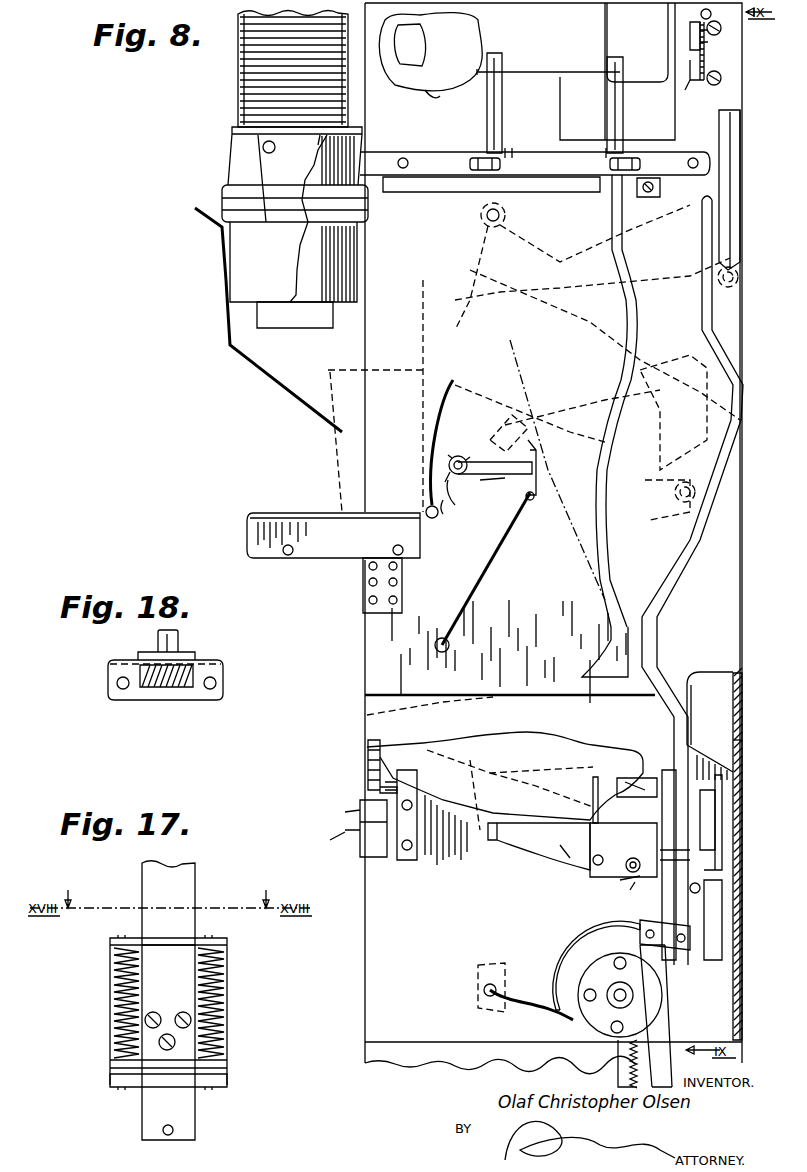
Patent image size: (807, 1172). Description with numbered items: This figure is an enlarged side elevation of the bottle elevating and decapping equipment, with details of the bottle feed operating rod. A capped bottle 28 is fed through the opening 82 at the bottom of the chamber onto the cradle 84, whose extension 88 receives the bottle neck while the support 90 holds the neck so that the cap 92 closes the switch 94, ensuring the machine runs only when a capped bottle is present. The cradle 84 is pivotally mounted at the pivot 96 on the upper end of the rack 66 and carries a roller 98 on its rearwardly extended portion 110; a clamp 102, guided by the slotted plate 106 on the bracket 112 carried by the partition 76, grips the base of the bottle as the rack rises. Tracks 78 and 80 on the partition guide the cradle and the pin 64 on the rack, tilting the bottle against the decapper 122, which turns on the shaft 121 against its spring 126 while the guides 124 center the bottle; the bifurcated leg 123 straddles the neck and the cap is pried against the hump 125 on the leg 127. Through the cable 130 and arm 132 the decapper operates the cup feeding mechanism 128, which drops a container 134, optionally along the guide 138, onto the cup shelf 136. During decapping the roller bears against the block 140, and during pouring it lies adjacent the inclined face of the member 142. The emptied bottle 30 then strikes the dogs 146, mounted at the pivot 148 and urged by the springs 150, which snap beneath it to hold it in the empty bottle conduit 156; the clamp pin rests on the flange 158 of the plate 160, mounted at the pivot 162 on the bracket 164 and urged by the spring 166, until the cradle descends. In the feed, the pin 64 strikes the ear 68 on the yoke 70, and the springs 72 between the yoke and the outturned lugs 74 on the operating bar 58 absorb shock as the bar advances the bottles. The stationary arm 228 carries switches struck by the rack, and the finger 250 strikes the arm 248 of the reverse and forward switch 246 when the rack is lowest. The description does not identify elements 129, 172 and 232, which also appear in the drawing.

In FIG. 8, the capped bottle 28 is at (530, 752).
In FIG. 8, the empty bottle 30 is at (470, 42).
In FIG. 18, the operating bar 58 is at (175, 687).
In FIG. 17, the operating bar 58 is at (178, 880).
In FIG. 8, the pin 64 is at (688, 935).
In FIG. 8, the rack 66 is at (622, 1052).
In FIG. 18, the ear 68 is at (180, 638).
In FIG. 18, the yoke 70 is at (224, 670).
In FIG. 17, the yoke 70 is at (200, 940).
In FIG. 17, the springs 72 is at (226, 990).
In FIG. 17, the outturned lugs 74 is at (118, 1072).
In FIG. 8, the partition 76 is at (448, 905).
In FIG. 8, the track 78 is at (610, 362).
In FIG. 8, the track 80 is at (735, 442).
In FIG. 8, the opening 82 is at (380, 700).
In FIG. 8, the cradle 84 is at (623, 858).
In FIG. 8, the extension 88 is at (555, 850).
In FIG. 8, the support 90 is at (407, 862).
In FIG. 8, the cap 92 is at (368, 758).
In FIG. 8, the switch 94 is at (358, 800).
In FIG. 8, the pivot 96 is at (617, 882).
In FIG. 8, the roller 98 is at (745, 295).
In FIG. 8, the clamp 102 is at (625, 790).
In FIG. 8, the plate 106 is at (689, 865).
In FIG. 8, the rearwardly extended portion 110 is at (740, 850).
In FIG. 8, the bracket 112 is at (742, 735).
In FIG. 8, the shaft 121 is at (460, 456).
In FIG. 8, the decapper 122 is at (489, 483).
In FIG. 8, the leg 123 is at (534, 500).
In FIG. 8, the guides 124 is at (499, 552).
In FIG. 8, the hump 125 is at (495, 497).
In FIG. 8, the spring 126 is at (454, 512).
In FIG. 8, the leg 127 is at (538, 458).
In FIG. 8, the cup feeding mechanism 128 is at (235, 160).
In FIG. 8, the slot 129 is at (523, 433).
In FIG. 8, the cable 130 is at (420, 250).
In FIG. 8, the arm 132 is at (449, 449).
In FIG. 8, the container 134 is at (343, 456).
In FIG. 8, the cup shelf 136 is at (326, 524).
In FIG. 8, the guide 138 is at (268, 320).
In FIG. 8, the block 140 is at (715, 700).
In FIG. 8, the member 142 is at (742, 207).
In FIG. 8, the dogs 146 is at (608, 113).
In FIG. 8, the pivot 148 is at (475, 157).
In FIG. 8, the springs 150 is at (610, 145).
In FIG. 8, the empty bottle conduit 156 is at (445, 101).
In FIG. 8, the flange 158 is at (692, 83).
In FIG. 8, the plate 160 is at (720, 51).
In FIG. 8, the pivot 162 is at (690, 37).
In FIG. 8, the bracket 164 is at (728, 65).
In FIG. 8, the spring 166 is at (694, 13).
In FIG. 8, the disc 172 is at (626, 995).
In FIG. 8, the arm 228 is at (676, 1007).
In FIG. 8, the terminal block 232 is at (382, 569).
In FIG. 8, the reverse and forward switch 246 is at (500, 970).
In FIG. 8, the arm 248 is at (537, 1005).
In FIG. 8, the finger 250 is at (586, 945).